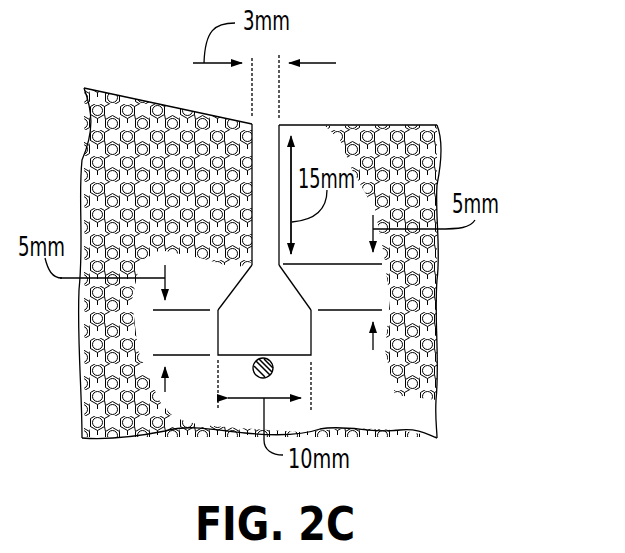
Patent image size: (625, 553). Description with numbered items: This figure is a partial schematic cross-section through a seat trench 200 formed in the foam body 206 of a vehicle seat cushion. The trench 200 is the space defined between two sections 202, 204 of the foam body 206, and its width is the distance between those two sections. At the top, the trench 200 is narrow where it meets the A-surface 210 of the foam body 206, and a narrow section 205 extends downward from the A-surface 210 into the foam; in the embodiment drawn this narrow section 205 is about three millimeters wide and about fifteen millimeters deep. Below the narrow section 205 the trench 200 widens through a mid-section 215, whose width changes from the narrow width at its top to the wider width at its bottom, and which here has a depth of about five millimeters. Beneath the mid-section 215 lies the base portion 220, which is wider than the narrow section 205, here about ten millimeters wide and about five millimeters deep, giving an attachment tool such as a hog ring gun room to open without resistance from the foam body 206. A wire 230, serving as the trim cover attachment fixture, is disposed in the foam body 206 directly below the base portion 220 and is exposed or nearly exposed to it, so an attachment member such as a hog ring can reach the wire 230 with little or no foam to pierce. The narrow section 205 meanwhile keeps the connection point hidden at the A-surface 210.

The seat trench 200 is at (360, 200).
The section of the foam body 202 is at (172, 120).
The section of the foam body 204 is at (395, 125).
The narrow section 205 is at (247, 195).
The foam body 206 is at (392, 42).
The A-surface 210 is at (306, 110).
The mid-section 215 is at (298, 286).
The base portion 220 is at (298, 334).
The wire 230 is at (273, 370).